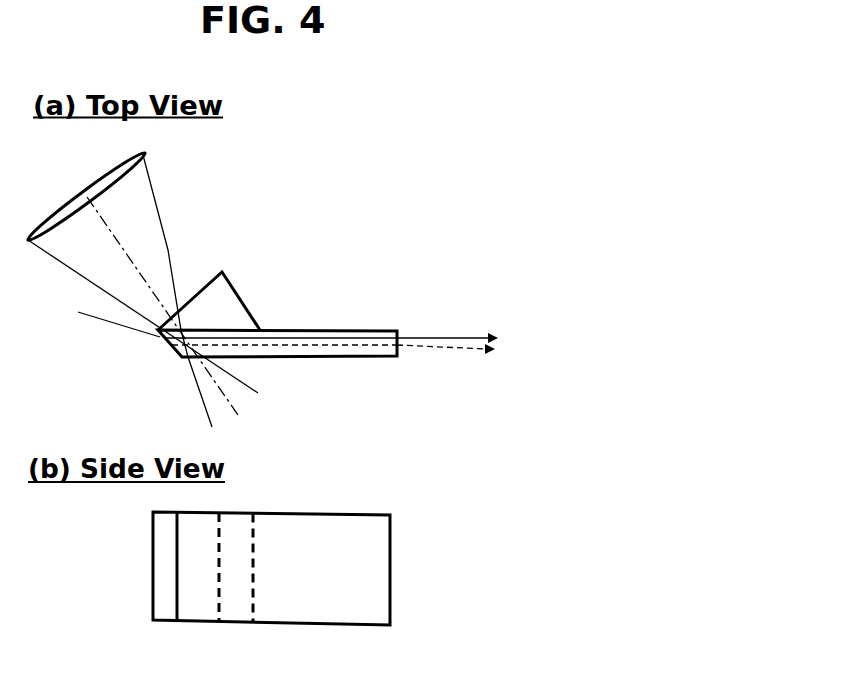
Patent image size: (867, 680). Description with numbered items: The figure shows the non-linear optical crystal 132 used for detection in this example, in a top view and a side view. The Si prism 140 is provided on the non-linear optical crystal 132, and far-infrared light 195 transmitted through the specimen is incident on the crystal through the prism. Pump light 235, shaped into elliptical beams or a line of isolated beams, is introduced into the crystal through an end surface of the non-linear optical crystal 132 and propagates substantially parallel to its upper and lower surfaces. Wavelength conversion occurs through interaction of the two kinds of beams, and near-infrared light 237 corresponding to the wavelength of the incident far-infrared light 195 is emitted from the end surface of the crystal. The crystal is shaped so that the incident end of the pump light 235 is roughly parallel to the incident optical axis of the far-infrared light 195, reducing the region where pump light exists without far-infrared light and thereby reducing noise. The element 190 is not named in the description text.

The light source 190 is at (150, 148).
The far-infrared light 195 is at (142, 192).
The Si prism 140 is at (218, 290).
The pump light 235 is at (103, 325).
The non-linear optical crystal 132 is at (347, 477).
The near-infrared light 237 is at (460, 349).